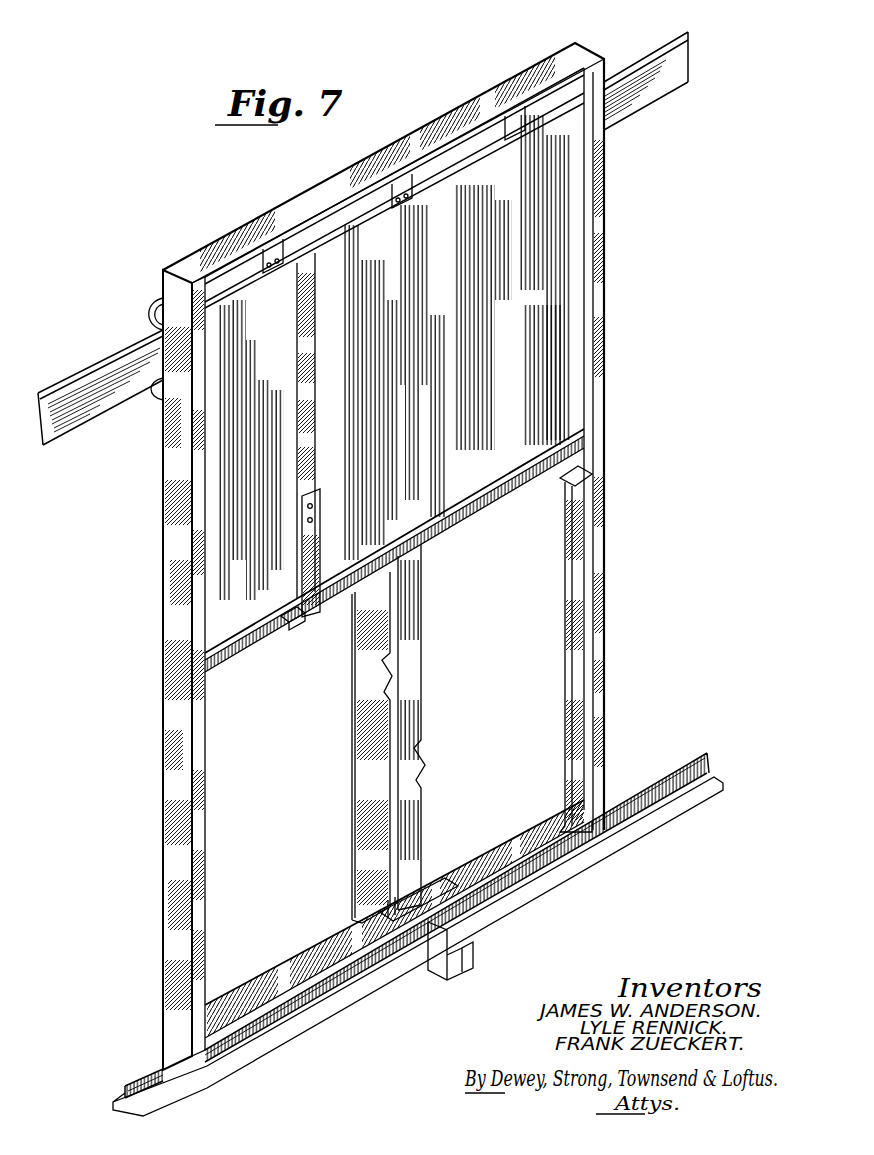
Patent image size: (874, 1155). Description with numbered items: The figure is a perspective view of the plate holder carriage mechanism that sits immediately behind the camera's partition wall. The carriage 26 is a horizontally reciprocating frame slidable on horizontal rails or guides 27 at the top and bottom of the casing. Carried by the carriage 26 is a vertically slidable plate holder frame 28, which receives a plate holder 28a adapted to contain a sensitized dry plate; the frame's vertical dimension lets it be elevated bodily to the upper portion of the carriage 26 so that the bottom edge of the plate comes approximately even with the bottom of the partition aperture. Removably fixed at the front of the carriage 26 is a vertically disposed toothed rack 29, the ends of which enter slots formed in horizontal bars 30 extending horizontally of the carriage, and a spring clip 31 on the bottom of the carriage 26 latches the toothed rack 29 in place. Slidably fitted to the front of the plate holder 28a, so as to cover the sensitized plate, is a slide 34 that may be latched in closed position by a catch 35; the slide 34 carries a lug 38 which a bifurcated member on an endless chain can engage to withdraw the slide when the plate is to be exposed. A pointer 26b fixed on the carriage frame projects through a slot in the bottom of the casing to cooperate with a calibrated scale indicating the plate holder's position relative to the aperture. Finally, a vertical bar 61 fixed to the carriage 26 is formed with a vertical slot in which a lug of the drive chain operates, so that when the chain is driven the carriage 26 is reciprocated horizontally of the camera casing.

The carriage 26 is at (170, 655).
The pointer 26b is at (468, 960).
The horizontal rails or guides 27 is at (90, 372).
The plate holder frame 28 is at (445, 152).
The plate holder 28a is at (472, 480).
The toothed rack 29 is at (412, 668).
The horizontal bars 30 is at (485, 863).
The spring clip 31 is at (390, 915).
The slide 34 is at (258, 646).
The catch 35 is at (313, 615).
The lug 38 is at (565, 478).
The vertical bar 61 is at (360, 766).